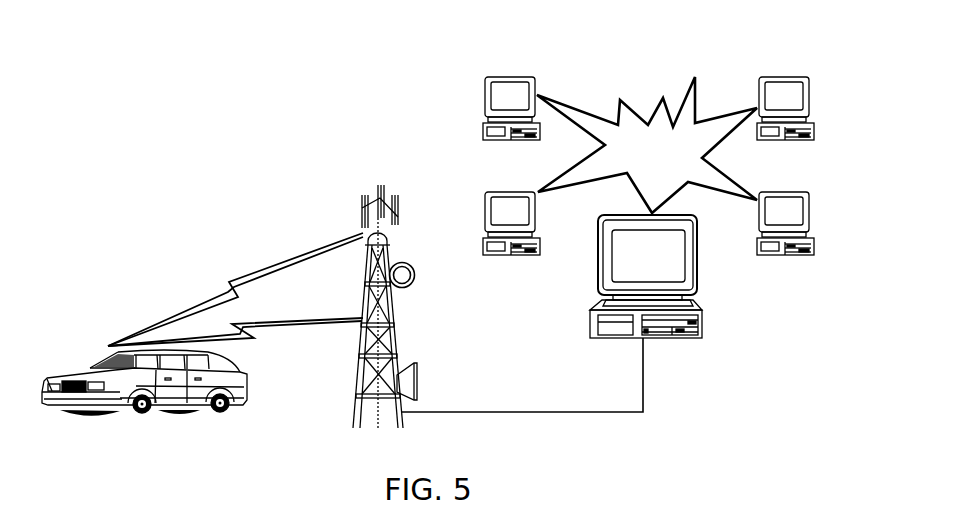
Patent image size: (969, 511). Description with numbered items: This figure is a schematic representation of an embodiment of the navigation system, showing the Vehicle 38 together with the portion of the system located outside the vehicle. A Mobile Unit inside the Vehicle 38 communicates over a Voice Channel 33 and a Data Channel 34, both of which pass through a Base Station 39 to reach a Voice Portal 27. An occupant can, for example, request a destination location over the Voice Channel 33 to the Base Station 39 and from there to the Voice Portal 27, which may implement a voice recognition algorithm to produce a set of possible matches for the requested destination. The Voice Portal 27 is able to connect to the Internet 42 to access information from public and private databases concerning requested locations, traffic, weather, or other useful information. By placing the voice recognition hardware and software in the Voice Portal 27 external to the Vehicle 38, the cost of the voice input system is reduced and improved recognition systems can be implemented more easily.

The Voice Portal 27 is at (666, 270).
The Voice Channel 33 is at (195, 297).
The Data Channel 34 is at (287, 324).
The Vehicle 38 is at (85, 367).
The Base Station 39 is at (395, 338).
The Internet 42 is at (671, 165).